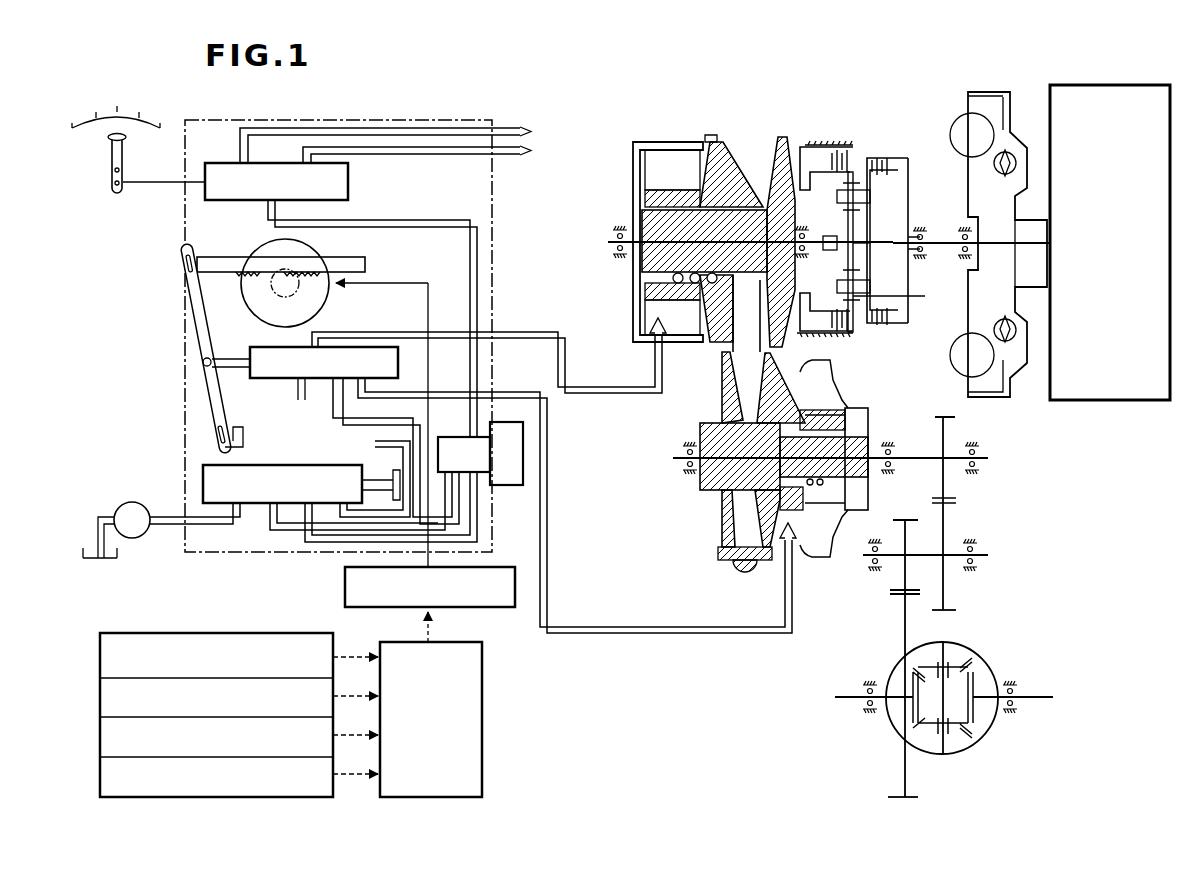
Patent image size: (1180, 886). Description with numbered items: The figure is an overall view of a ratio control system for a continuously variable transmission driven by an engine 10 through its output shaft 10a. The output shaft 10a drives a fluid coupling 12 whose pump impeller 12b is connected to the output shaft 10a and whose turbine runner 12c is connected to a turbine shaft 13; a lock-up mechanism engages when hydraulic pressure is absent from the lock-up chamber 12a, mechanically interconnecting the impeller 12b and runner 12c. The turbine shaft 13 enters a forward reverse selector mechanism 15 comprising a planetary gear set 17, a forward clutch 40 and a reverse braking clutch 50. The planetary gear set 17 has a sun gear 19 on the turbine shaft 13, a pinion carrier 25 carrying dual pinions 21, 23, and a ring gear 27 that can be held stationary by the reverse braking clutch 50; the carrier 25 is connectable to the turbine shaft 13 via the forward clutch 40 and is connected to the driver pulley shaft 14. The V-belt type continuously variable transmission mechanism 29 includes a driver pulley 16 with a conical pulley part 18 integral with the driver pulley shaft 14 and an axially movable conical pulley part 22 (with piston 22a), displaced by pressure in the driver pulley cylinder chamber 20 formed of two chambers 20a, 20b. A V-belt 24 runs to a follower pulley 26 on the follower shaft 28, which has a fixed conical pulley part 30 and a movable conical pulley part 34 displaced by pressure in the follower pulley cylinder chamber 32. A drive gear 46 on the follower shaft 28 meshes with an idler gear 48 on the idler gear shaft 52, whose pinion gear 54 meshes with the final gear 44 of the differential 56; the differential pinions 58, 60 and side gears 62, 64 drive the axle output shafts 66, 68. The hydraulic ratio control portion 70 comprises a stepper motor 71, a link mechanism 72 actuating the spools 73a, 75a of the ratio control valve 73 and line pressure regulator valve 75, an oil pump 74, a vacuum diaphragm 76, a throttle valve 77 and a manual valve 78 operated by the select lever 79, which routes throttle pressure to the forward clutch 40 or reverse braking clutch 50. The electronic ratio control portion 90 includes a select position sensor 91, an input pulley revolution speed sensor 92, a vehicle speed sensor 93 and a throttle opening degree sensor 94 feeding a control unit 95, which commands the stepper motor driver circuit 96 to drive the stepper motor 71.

The engine 10 is at (1097, 85).
The output shaft 10a is at (1033, 246).
The fluid coupling 12 is at (990, 90).
The lock-up chamber 12a is at (1000, 290).
The pump impeller 12b is at (955, 366).
The turbine runner 12c is at (975, 358).
The turbine shaft 13 is at (943, 241).
The driver pulley shaft 14 is at (820, 240).
The forward reverse selector mechanism 15 is at (840, 148).
The driver pulley 16 is at (779, 130).
The planetary gear set 17 is at (883, 185).
The conical pulley part 18 is at (792, 145).
The sun gear 19 is at (855, 245).
The driver pulley cylinder chamber 20 is at (665, 150).
The chamber 20a is at (640, 340).
The chamber 20b is at (708, 142).
The pinion 21 is at (852, 282).
The movable conical pulley part 22 is at (726, 150).
The piston 22a is at (716, 135).
The pinion 23 is at (895, 275).
The V-belt 24 is at (720, 357).
The pinion carrier 25 is at (840, 270).
The follower pulley 26 is at (733, 568).
The ring gear 27 is at (855, 318).
The follower shaft 28 is at (918, 470).
The V-belt type continuously variable transmission mechanism 29 is at (712, 402).
The conical pulley part 30 is at (722, 530).
The follower pulley cylinder chamber 32 is at (798, 560).
The movable conical pulley part 34 is at (770, 565).
The forward clutch 40 is at (893, 158).
The final gear 44 is at (913, 797).
The drive gear 46 is at (943, 415).
The idler gear 48 is at (958, 612).
The reverse braking clutch 50 is at (852, 160).
The idler gear shaft 52 is at (966, 545).
The pinion gear 54 is at (897, 570).
The differential 56 is at (1002, 654).
The differential side gear 58 is at (965, 725).
The differential pinion 60 is at (930, 670).
The side gear 62 is at (905, 722).
The side gear 64 is at (975, 682).
The axle output shaft 66 is at (845, 698).
The axle output shaft 68 is at (1045, 700).
The hydraulic ratio control portion 70 is at (393, 119).
The stepper motor 71 is at (322, 251).
The link mechanism 72 is at (195, 335).
The ratio control valve 73 is at (300, 383).
The spool 73a is at (233, 358).
The oil pump 74 is at (134, 500).
The line pressure regulator valve 75 is at (256, 510).
The spool 75a is at (380, 478).
The vacuum diaphragm 76 is at (528, 453).
The throttle valve 77 is at (468, 436).
The manual valve 78 is at (352, 190).
The select lever 79 is at (106, 157).
The electronic ratio control portion 90 is at (358, 642).
The select position sensor 91 is at (100, 655).
The input pulley revolution speed sensor 92 is at (100, 696).
The vehicle speed sensor 93 is at (100, 740).
The throttle opening degree sensor 94 is at (100, 778).
The control unit 95 is at (485, 686).
The stepper motor driver circuit 96 is at (505, 565).